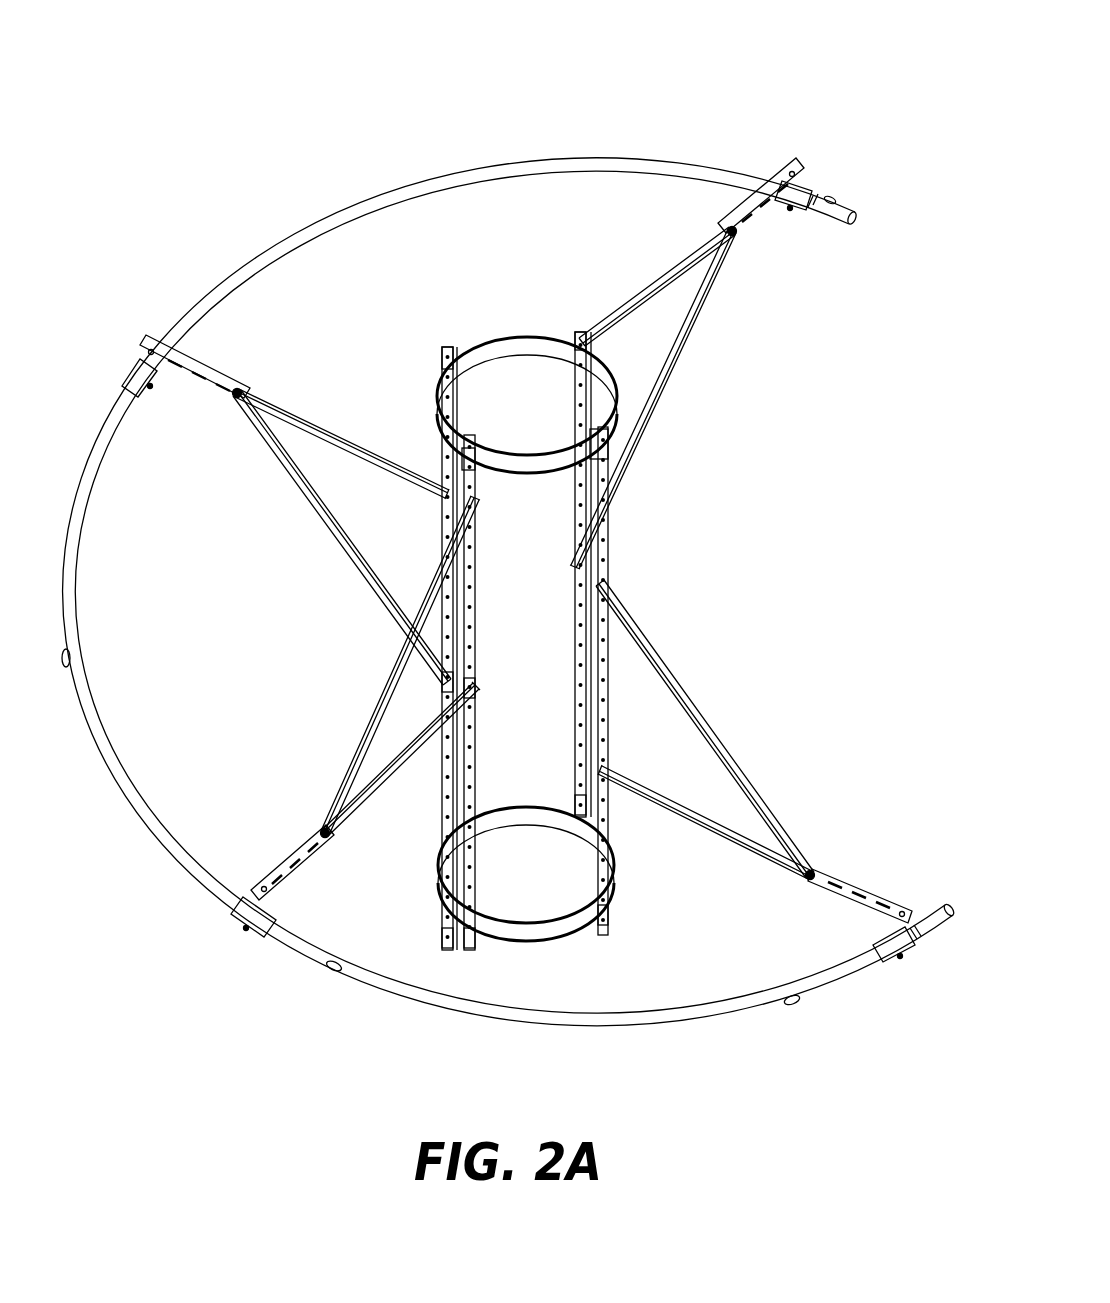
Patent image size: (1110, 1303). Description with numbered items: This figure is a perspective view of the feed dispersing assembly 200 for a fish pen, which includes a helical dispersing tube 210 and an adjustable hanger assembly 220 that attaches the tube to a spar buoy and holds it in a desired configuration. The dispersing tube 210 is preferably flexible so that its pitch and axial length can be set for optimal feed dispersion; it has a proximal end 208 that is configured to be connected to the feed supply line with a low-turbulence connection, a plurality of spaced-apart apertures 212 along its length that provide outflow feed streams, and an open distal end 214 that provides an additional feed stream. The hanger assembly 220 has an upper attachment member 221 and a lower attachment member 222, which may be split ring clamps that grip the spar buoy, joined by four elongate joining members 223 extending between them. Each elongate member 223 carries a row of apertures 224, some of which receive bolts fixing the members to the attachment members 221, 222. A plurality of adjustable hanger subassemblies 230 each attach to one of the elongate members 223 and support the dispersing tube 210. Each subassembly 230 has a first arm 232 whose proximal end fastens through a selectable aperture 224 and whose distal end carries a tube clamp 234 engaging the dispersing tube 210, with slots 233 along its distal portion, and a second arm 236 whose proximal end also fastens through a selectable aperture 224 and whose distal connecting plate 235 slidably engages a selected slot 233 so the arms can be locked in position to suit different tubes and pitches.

The feed dispersing assembly 200 is at (858, 94).
The proximal end 208 is at (858, 216).
The helical dispersing tube 210 is at (513, 600).
The apertures 212 is at (838, 193).
The distal end 214 is at (936, 902).
The hanger assembly 220 is at (535, 636).
The upper attachment member 221 is at (524, 334).
The lower attachment member 222 is at (536, 940).
The elongate joining members 223 is at (455, 420).
The apertures 224 is at (478, 557).
The adjustable hanger subassemblies 230 is at (543, 549).
The first arm 232 is at (526, 519).
The slots 233 is at (210, 368).
The tube clamp 234 is at (153, 385).
The connecting plate 235 is at (245, 386).
The second arm 236 is at (282, 442).